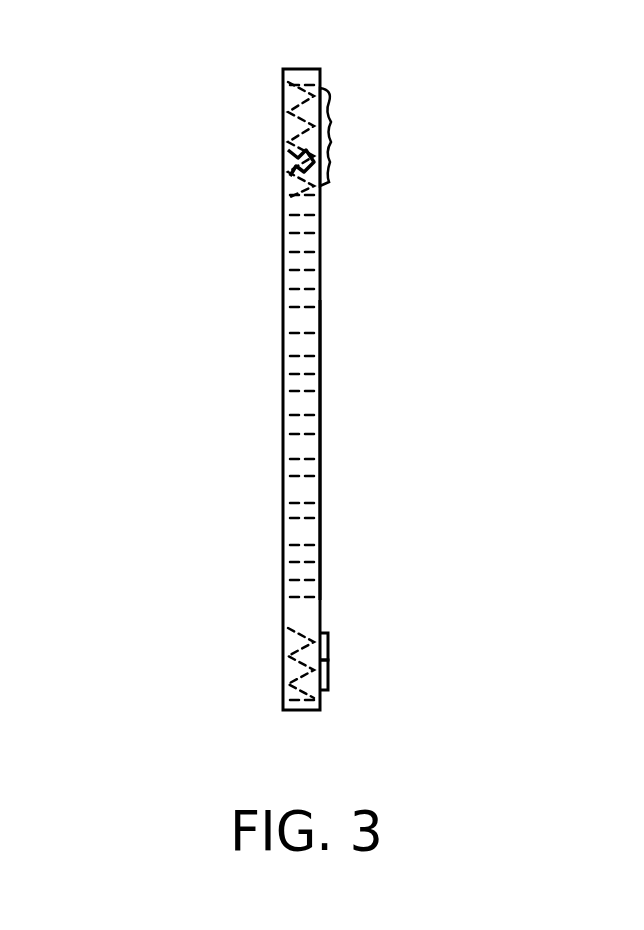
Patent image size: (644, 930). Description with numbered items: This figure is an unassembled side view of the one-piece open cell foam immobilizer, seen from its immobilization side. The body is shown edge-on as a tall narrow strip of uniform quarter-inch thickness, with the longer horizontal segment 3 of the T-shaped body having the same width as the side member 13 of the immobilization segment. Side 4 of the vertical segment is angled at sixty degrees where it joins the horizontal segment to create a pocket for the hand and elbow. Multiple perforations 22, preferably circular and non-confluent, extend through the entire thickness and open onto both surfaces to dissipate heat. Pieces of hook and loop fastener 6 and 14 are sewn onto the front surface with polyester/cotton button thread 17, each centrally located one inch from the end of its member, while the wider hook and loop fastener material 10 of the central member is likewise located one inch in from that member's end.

The horizontal segment 3 is at (283, 150).
The angled side 4 is at (320, 311).
The hook and loop fastener 6 is at (325, 130).
The hook and loop fastener material 10 is at (322, 672).
The side member 13 is at (320, 487).
The hook and loop fastener 14 is at (320, 624).
The polyester/cotton button thread 17 is at (304, 100).
The perforations 22 is at (300, 415).